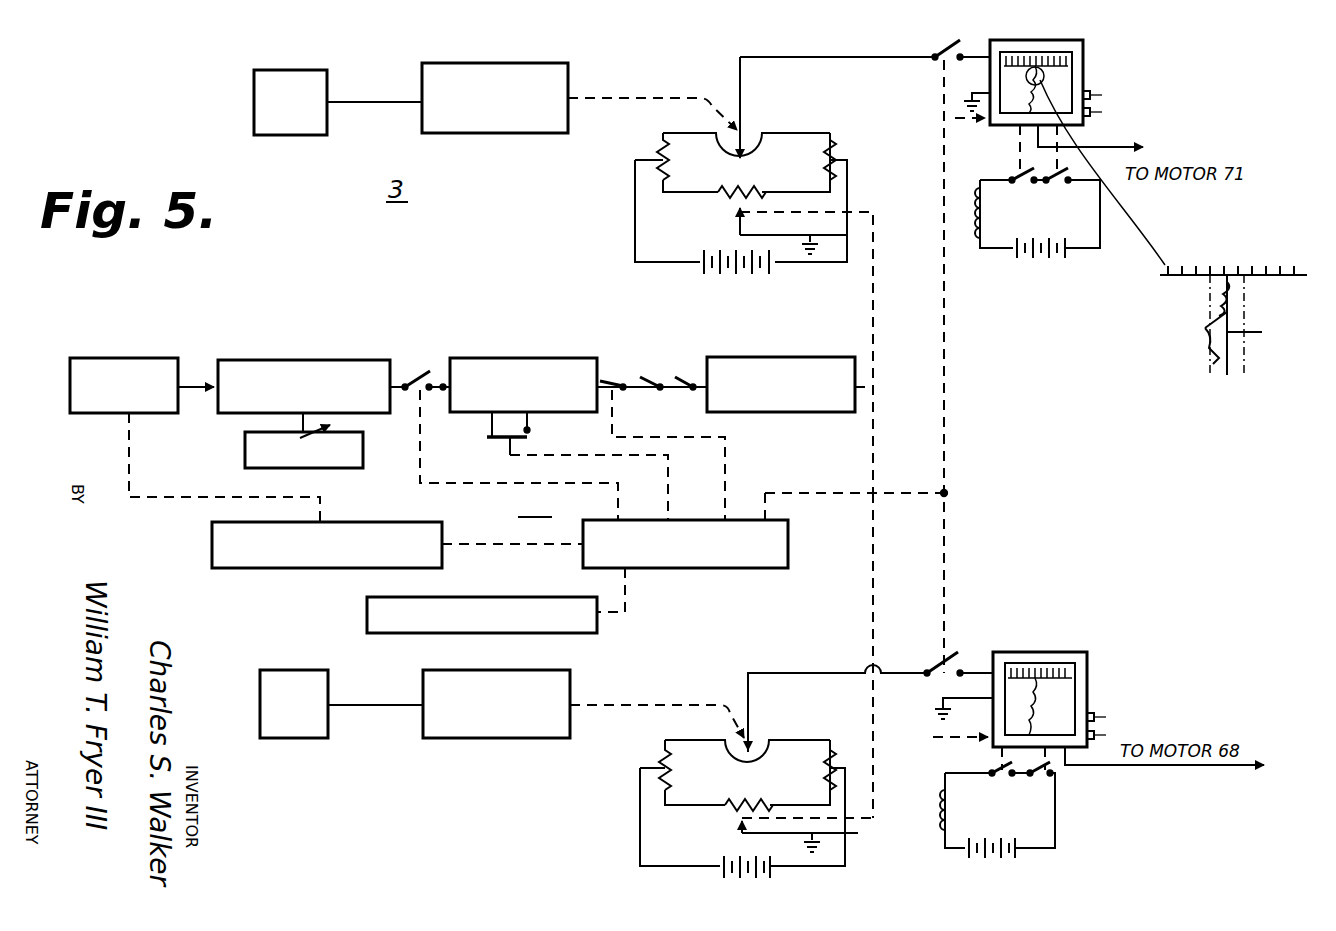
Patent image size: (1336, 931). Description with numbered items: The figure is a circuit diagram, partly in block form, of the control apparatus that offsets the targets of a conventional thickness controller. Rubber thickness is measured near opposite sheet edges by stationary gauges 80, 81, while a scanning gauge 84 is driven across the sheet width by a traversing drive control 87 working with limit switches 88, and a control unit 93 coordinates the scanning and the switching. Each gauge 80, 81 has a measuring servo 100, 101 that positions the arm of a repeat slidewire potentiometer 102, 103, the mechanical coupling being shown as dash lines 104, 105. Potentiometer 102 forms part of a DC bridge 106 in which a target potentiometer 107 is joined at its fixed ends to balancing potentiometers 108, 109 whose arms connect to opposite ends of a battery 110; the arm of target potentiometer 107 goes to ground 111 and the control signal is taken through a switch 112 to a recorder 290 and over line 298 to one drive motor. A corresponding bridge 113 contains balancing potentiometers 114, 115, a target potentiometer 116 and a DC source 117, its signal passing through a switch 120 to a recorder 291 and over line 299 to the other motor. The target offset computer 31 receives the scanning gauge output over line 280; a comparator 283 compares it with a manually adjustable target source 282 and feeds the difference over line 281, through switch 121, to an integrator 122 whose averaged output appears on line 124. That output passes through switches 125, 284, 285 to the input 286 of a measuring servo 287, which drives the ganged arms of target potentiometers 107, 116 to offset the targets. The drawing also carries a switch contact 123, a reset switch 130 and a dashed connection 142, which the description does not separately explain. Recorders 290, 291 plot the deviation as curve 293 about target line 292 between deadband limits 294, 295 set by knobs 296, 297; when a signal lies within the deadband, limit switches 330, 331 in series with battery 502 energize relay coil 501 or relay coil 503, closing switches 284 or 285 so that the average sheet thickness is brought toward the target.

The target offset computer 31 is at (535, 504).
The gauge 80 is at (256, 84).
The gauge 81 is at (300, 669).
The scanning gauge 84 is at (176, 355).
The traversing drive control 87 is at (442, 558).
The limit switches 88 is at (464, 634).
The control unit 93 is at (788, 562).
The measuring servo 100 is at (528, 62).
The measuring servo 101 is at (544, 676).
The repeat slidewire potentiometer 102 is at (760, 122).
The repeat slidewire potentiometer 103 is at (738, 708).
The dash line 104 is at (603, 102).
The dash line 105 is at (654, 704).
The DC bridge 106 is at (768, 186).
The target potentiometer 107 is at (727, 198).
The balancing potentiometer 108 is at (660, 160).
The balancing potentiometer 109 is at (836, 160).
The battery 110 is at (700, 260).
The ground 111 is at (788, 242).
The switch 112 is at (955, 38).
The bridge 113 is at (805, 790).
The balancing potentiometer 114 is at (662, 766).
The balancing potentiometer 115 is at (836, 756).
The target potentiometer 116 is at (738, 812).
The DC source 117 is at (720, 860).
The switch 120 is at (954, 658).
The switch 121 is at (414, 372).
The integrator 122 is at (556, 360).
The switch contact 123 is at (438, 374).
The line 124 is at (604, 380).
The switch 125 is at (648, 338).
The reset switch 130 is at (488, 438).
The connection to switches 142 is at (876, 308).
The line 280 is at (200, 386).
The line 281 is at (430, 396).
The target source 282 is at (272, 485).
The comparator 283 is at (368, 362).
The switch 284 is at (652, 380).
The switch 285 is at (685, 380).
The input 286 is at (704, 398).
The measuring servo 287 is at (858, 358).
The recorder 290 is at (1027, 46).
The recorder 291 is at (1084, 652).
The line 292 is at (1264, 325).
The curve 293 is at (1205, 330).
The deadband limit 294 is at (1202, 316).
The deadband limit 295 is at (1248, 286).
The knob 296 is at (1124, 403).
The knob 297 is at (1124, 424).
The line 298 is at (1090, 133).
The line 299 is at (1122, 772).
The limit switch 330 is at (1020, 186).
The limit switch 331 is at (1054, 186).
The relay coil 501 is at (1012, 175).
The battery 502 is at (1058, 268).
The relay coil 503 is at (946, 798).